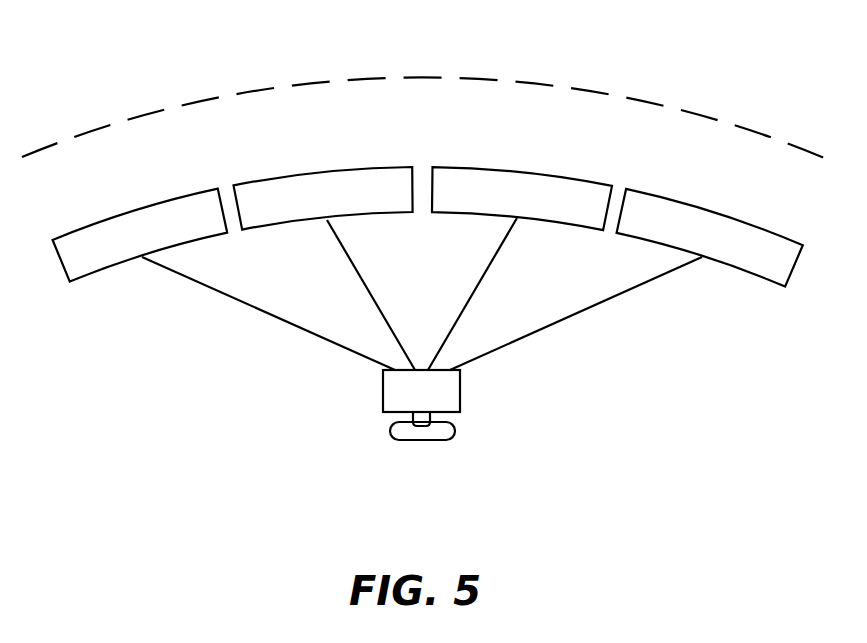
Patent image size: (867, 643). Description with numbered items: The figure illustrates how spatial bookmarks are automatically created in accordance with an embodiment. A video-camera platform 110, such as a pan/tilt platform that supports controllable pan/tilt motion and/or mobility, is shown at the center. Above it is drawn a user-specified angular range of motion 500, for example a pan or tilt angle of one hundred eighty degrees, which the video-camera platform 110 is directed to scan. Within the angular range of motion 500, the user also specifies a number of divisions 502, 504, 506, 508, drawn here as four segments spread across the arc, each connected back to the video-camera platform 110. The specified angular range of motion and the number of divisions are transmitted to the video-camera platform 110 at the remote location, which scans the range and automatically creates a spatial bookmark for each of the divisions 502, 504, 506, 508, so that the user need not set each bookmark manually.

The angular range of motion 500 is at (426, 64).
The division 502 is at (135, 208).
The division 504 is at (323, 170).
The division 506 is at (525, 172).
The division 508 is at (720, 210).
The video-camera platform 110 is at (422, 442).